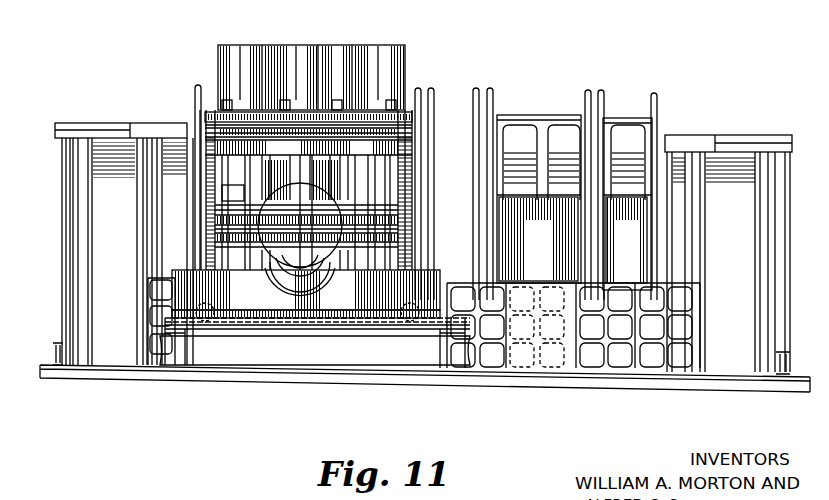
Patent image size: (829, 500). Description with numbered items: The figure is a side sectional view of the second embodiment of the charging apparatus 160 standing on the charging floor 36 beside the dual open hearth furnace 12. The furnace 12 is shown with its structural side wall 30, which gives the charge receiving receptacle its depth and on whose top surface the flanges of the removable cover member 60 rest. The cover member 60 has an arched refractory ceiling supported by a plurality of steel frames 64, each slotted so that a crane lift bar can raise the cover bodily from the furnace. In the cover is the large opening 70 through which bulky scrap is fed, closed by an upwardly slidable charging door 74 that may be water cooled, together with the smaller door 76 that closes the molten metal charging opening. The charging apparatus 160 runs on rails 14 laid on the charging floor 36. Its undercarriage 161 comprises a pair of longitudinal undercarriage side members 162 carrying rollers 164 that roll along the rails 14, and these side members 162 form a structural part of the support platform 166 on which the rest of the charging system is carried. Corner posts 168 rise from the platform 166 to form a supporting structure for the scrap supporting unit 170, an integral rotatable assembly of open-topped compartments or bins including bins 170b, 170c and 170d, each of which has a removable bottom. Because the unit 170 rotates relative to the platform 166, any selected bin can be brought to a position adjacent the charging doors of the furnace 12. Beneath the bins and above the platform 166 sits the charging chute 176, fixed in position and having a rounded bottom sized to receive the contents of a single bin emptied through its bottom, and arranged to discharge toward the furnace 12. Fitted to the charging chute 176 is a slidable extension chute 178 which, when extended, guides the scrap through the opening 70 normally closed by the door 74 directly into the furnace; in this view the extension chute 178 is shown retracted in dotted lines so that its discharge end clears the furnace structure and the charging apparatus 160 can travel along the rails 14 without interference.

The furnace 12 is at (529, 80).
The rails 14 is at (300, 329).
The side wall 30 is at (555, 362).
The charging floor 36 is at (375, 336).
The cover member 60 is at (556, 150).
The steel frames 64 is at (195, 84).
The large opening 70 is at (272, 255).
The charging door 74 is at (358, 135).
The smaller door 76 is at (205, 185).
The charging apparatus 160 is at (421, 48).
The undercarriage 161 is at (265, 325).
The undercarriage side members 162 is at (235, 320).
The rollers 164 is at (205, 320).
The support platform 166 is at (258, 300).
The corner posts 168 is at (218, 150).
The scrap supporting unit 170 is at (334, 26).
The bin 170b is at (386, 46).
The bin 170c is at (336, 46).
The bin 170d is at (246, 48).
The charging chute 176 is at (307, 160).
The extension chute 178 is at (315, 258).